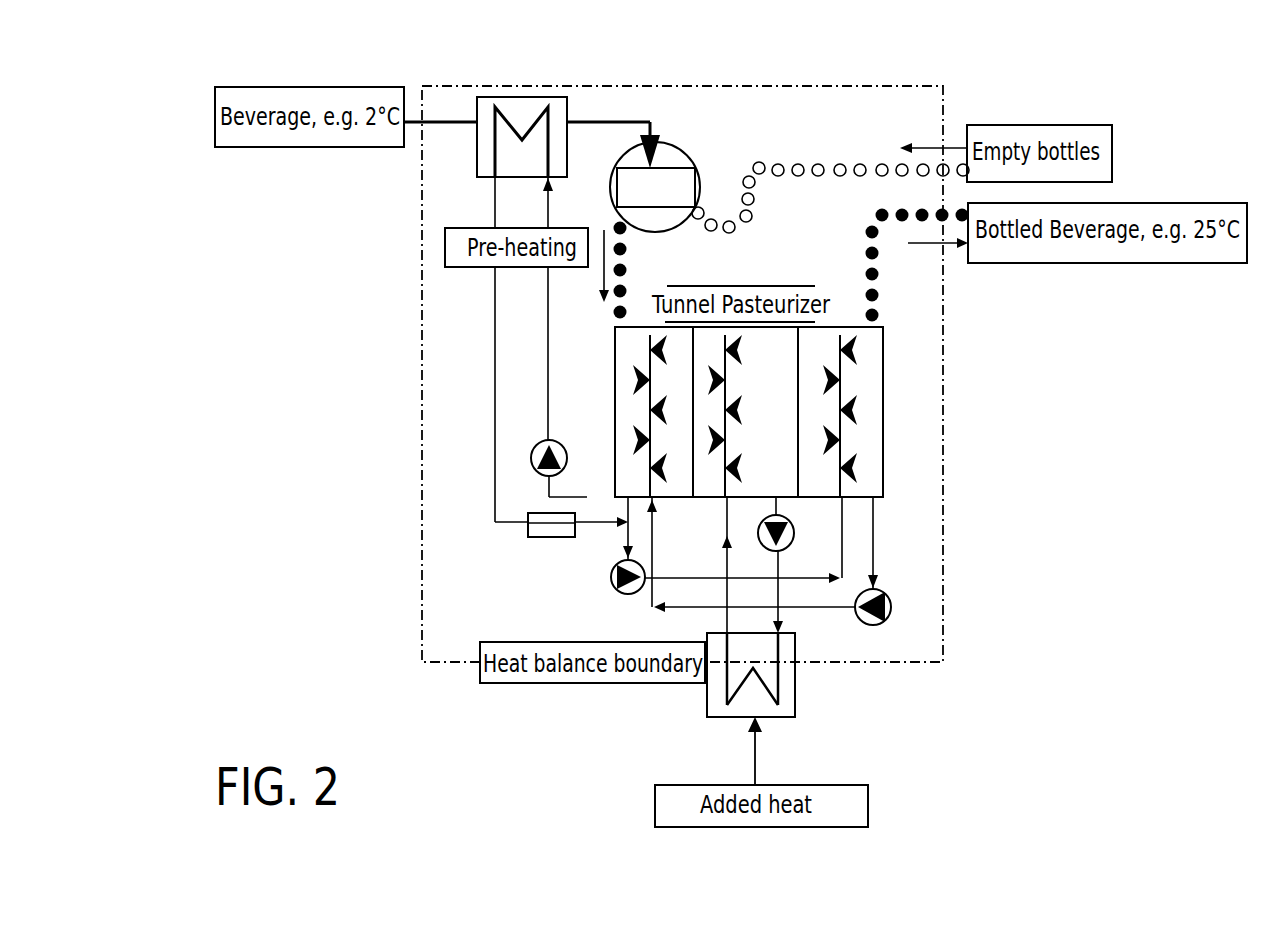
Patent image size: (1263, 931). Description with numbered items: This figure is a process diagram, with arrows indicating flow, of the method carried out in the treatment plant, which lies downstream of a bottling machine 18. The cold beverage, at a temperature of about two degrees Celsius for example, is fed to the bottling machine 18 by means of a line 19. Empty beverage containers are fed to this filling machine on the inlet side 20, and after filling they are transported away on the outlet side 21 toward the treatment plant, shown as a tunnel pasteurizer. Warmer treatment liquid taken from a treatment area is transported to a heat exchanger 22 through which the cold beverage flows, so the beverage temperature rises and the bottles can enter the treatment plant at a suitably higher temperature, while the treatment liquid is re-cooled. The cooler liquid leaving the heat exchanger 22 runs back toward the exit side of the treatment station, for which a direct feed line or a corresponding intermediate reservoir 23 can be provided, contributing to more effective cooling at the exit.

The bottling machine 18 is at (665, 163).
The line 19 is at (438, 119).
The inlet side 20 is at (712, 193).
The outlet side 21 is at (640, 246).
The heat exchanger 22 is at (520, 108).
The intermediate reservoir 23 is at (528, 523).